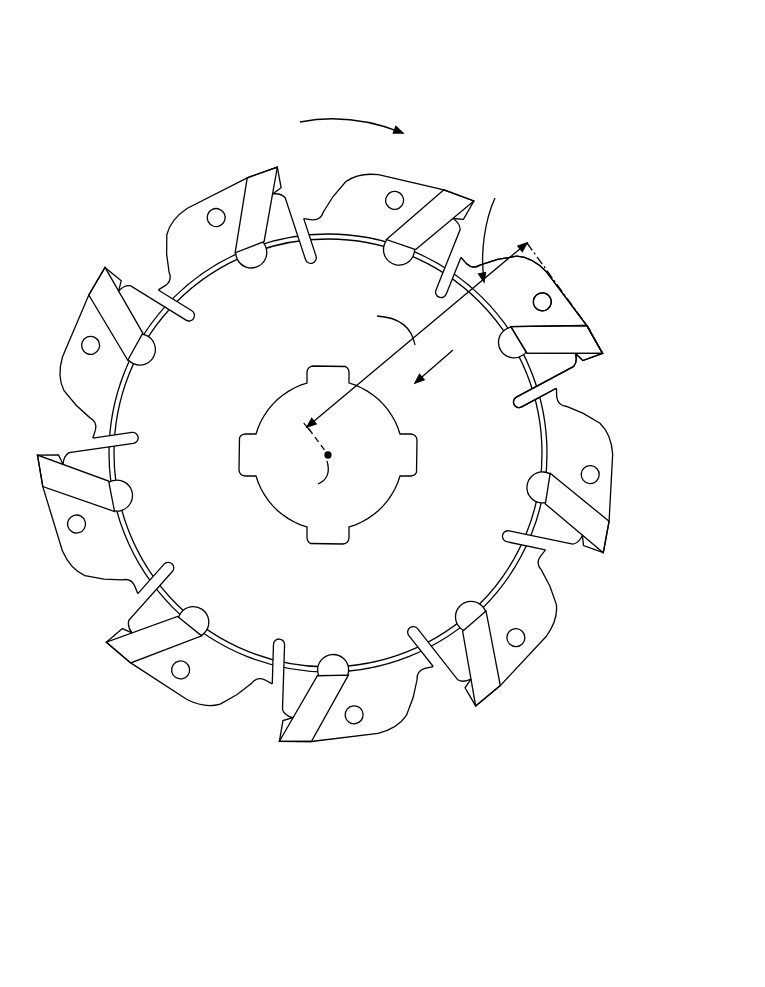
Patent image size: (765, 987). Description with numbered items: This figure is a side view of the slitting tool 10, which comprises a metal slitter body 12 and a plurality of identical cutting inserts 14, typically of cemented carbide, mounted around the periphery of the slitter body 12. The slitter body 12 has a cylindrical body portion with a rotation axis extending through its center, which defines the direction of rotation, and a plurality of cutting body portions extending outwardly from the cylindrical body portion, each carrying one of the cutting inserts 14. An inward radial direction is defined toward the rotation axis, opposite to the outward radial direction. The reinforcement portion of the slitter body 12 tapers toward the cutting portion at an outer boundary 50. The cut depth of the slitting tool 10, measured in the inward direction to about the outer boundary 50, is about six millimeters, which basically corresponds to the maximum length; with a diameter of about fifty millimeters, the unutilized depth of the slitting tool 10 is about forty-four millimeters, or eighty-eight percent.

The slitting tool 10 is at (140, 92).
The slitter body 12 is at (174, 188).
The cutting insert 14 is at (628, 338).
The outer boundary 50 is at (508, 312).